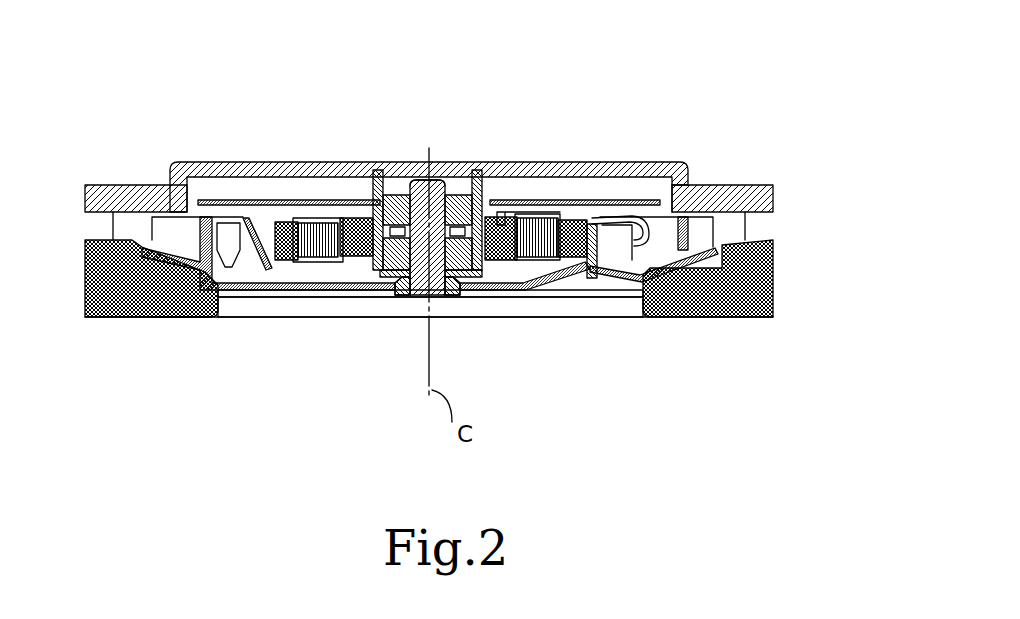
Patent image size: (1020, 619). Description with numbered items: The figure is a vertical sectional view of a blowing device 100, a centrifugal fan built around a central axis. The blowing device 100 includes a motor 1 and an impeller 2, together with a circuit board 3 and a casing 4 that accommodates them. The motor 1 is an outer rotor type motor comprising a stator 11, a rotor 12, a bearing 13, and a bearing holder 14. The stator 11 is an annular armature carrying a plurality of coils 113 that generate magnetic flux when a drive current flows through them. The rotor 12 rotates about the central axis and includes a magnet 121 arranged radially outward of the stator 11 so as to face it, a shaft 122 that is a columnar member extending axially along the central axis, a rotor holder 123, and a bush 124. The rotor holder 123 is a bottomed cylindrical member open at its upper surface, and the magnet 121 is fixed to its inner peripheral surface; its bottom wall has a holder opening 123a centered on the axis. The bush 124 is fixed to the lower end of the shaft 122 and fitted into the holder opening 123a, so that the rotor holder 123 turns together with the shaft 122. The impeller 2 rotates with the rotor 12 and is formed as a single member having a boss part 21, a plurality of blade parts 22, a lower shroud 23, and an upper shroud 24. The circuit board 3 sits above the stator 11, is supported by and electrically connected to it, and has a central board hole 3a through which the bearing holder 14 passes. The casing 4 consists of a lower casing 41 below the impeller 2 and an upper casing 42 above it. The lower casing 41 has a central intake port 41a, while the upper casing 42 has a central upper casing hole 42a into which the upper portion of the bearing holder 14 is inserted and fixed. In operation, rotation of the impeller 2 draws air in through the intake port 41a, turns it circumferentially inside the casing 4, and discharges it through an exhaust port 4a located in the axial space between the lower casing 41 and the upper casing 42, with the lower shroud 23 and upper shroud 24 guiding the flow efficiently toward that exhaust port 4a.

The blowing device 100 is at (728, 87).
The motor 1 is at (416, 310).
The impeller 2 is at (456, 239).
The circuit board 3 is at (262, 198).
The board hole 3a is at (370, 198).
The casing 4 is at (439, 278).
The exhaust port 4a is at (90, 218).
The stator 11 is at (537, 210).
The rotor 12 is at (330, 288).
The bearing 13 is at (456, 205).
The bearing holder 14 is at (378, 180).
The boss part 21 is at (617, 291).
The blade parts 22 is at (733, 196).
The lower shroud 23 is at (683, 318).
The upper shroud 24 is at (620, 220).
The lower casing 41 is at (776, 270).
The intake port 41a is at (220, 318).
The upper casing 42 is at (775, 199).
The upper casing hole 42a is at (531, 207).
The coils 113 is at (547, 263).
The magnet 121 is at (573, 212).
The shaft 122 is at (415, 178).
The rotor holder 123 is at (353, 292).
The holder opening 123a is at (395, 285).
The bush 124 is at (458, 287).